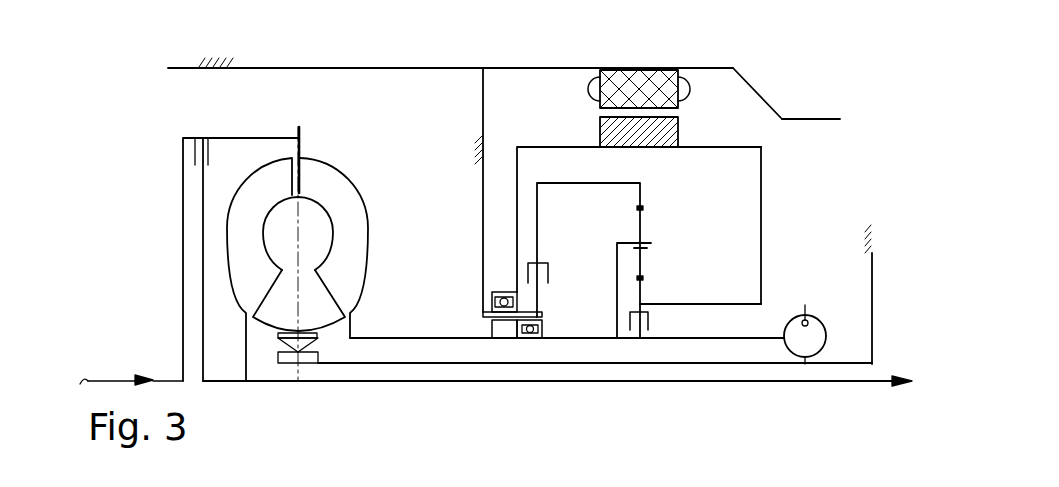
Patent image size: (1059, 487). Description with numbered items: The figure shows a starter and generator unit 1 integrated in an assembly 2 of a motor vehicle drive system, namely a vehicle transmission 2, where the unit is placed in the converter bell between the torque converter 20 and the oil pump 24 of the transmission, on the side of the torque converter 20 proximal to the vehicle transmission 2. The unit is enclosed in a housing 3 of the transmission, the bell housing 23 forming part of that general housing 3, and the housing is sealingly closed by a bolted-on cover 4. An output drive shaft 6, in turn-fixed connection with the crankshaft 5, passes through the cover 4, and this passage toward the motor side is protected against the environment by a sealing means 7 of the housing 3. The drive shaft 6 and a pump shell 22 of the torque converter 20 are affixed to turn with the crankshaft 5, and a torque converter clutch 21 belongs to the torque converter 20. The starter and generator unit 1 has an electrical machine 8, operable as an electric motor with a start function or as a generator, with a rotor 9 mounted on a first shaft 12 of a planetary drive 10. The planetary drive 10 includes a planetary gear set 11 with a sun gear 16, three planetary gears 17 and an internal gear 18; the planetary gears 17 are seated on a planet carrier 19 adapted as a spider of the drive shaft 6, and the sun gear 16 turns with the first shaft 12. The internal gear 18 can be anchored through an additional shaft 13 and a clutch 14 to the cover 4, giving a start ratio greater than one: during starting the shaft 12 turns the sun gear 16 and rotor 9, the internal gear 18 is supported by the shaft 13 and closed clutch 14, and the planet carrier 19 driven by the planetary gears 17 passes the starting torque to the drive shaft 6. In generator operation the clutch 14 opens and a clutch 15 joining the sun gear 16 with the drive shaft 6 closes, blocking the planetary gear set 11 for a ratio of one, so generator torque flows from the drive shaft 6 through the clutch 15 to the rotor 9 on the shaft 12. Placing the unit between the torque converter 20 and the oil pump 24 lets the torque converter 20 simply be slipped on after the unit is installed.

The starter and generator unit 1 is at (587, 140).
The vehicle transmission 2 is at (806, 220).
The housing 3 is at (793, 118).
The cover of housing 4 is at (483, 119).
The crankshaft 5 is at (102, 378).
The drive shaft 6 is at (425, 338).
The sealing means 7 is at (490, 333).
The electrical machine 8 is at (652, 80).
The rotor of electrical machine 9 is at (672, 129).
The planetary drive 10 is at (770, 175).
The planetary gear set 11 is at (658, 222).
The first shaft 12 is at (742, 147).
The additional shaft 13 is at (640, 177).
The clutch 14 is at (550, 273).
The clutch 15 is at (655, 323).
The sun gear 16 is at (645, 283).
The planetary gear 17 is at (645, 258).
The internal gear 18 is at (638, 197).
The planet carrier 19 is at (617, 285).
The torque converter 20 is at (320, 223).
The torque converter clutch 21 is at (208, 150).
The pump shell of the torque converter 22 is at (330, 183).
The bell housing 23 is at (740, 73).
The oil pump 24 is at (818, 330).